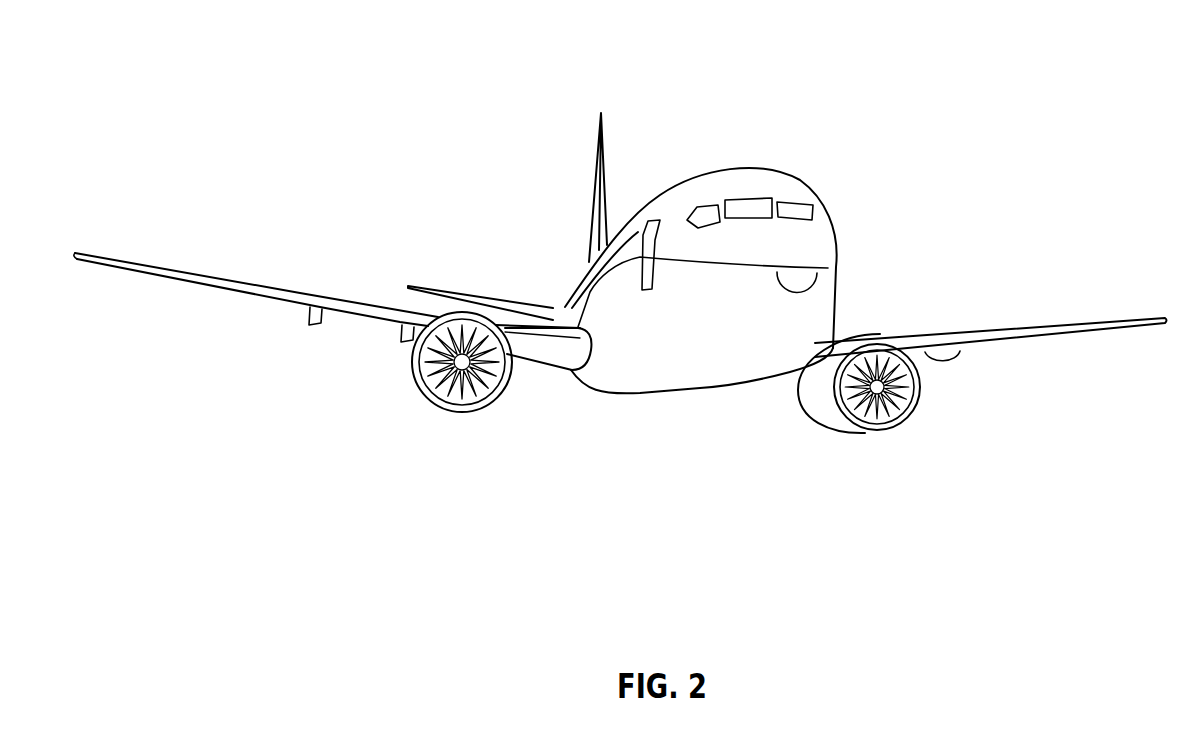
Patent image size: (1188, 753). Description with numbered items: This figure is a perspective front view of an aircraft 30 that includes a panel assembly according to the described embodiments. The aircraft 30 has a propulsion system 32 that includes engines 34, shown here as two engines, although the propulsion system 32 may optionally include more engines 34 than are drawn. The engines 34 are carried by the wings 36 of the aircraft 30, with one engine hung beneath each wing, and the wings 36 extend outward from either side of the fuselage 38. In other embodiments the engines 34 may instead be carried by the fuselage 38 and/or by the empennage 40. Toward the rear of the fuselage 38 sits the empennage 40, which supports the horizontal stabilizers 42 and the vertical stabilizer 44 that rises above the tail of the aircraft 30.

The aircraft 30 is at (620, 262).
The propulsion system 32 is at (620, 302).
The engines 34 is at (453, 410).
The wings 36 is at (220, 277).
The fuselage 38 is at (833, 233).
The empennage 40 is at (523, 216).
The horizontal stabilizers 42 is at (447, 286).
The vertical stabilizer 44 is at (596, 152).